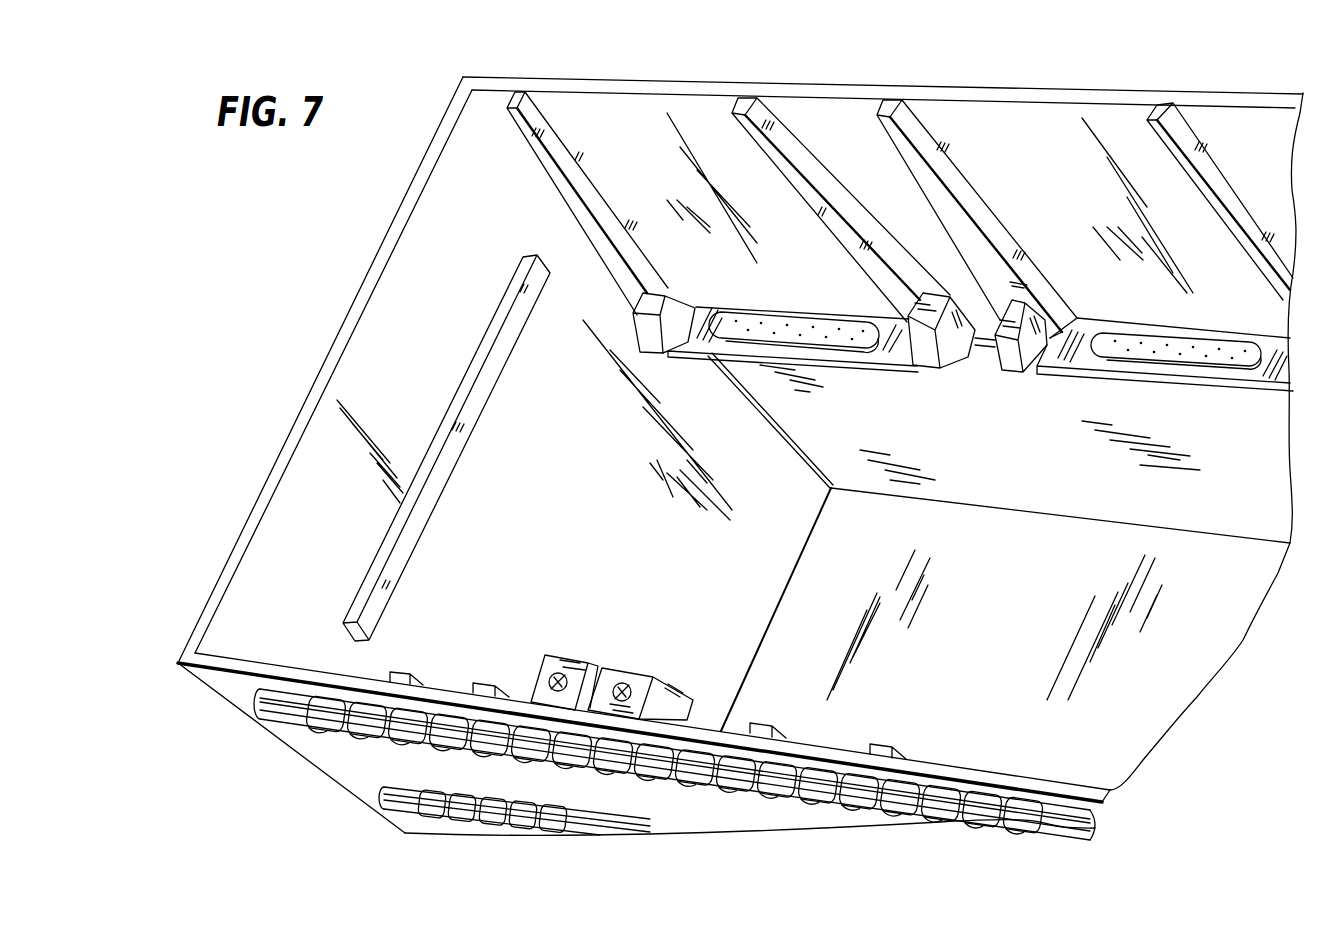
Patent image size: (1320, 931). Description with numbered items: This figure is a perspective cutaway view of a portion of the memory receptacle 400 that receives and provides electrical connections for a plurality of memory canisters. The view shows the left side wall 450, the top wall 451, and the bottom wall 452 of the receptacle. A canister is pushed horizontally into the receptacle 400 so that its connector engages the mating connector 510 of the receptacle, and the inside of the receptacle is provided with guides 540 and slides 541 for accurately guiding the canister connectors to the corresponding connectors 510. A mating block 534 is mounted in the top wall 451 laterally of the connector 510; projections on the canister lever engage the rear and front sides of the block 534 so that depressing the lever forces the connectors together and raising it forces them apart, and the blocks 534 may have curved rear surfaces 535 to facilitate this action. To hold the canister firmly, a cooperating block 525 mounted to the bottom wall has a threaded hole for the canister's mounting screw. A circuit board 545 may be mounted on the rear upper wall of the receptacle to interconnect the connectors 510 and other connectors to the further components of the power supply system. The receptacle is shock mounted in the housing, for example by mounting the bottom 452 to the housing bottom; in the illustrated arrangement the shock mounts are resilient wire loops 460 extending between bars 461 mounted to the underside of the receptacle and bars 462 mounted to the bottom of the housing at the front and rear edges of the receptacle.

The receptacle 400 is at (333, 413).
The left side wall 450 is at (383, 297).
The top wall 451 is at (637, 113).
The bottom wall 452 is at (352, 783).
The resilient wire loops 460 is at (313, 725).
The bars 461 is at (338, 700).
The bars 462 is at (376, 732).
The mating connector 510 is at (1227, 352).
The cooperating block 525 is at (633, 673).
The mating block 534 is at (1020, 372).
The curved rear surfaces 535 is at (1005, 368).
The guides 540 is at (520, 280).
The slides 541 is at (405, 668).
The circuit board 545 is at (952, 490).